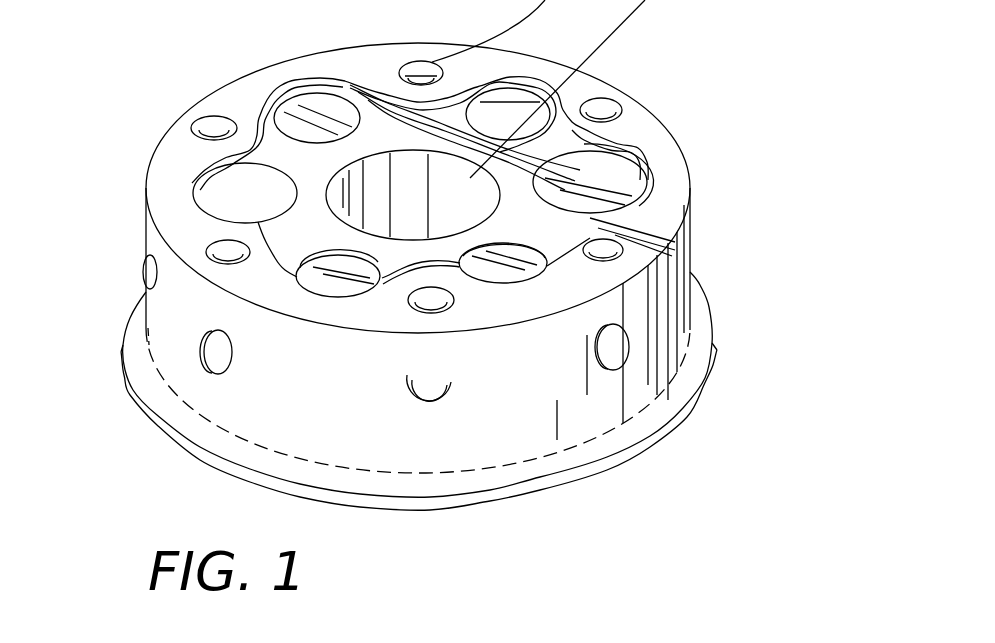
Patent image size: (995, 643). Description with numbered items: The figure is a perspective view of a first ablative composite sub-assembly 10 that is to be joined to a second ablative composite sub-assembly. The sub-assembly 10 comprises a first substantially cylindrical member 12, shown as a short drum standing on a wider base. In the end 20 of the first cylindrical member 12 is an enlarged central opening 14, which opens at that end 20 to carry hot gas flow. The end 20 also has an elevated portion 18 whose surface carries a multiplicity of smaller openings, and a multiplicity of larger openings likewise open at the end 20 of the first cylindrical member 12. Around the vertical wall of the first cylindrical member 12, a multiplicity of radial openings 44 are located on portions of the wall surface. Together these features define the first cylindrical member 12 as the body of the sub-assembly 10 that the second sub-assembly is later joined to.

The first ablative composite sub-assembly 10 is at (699, 239).
The first substantially cylindrical member 12 is at (419, 391).
The enlarged central opening 14 is at (453, 192).
The elevated portion 18 is at (663, 175).
The end 20 is at (525, 182).
The radial openings 44 is at (205, 356).